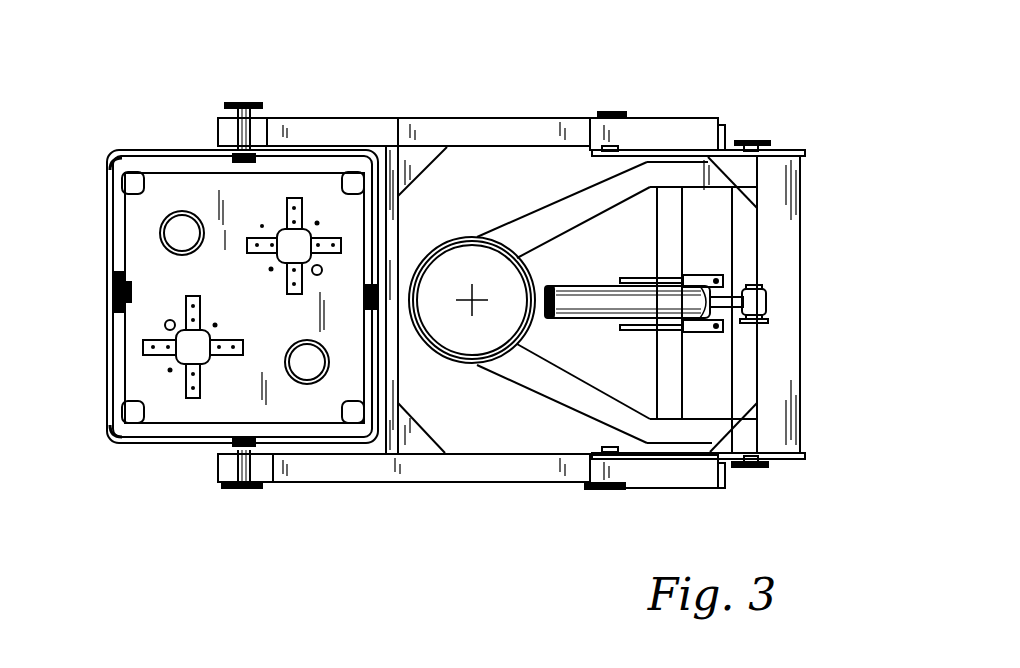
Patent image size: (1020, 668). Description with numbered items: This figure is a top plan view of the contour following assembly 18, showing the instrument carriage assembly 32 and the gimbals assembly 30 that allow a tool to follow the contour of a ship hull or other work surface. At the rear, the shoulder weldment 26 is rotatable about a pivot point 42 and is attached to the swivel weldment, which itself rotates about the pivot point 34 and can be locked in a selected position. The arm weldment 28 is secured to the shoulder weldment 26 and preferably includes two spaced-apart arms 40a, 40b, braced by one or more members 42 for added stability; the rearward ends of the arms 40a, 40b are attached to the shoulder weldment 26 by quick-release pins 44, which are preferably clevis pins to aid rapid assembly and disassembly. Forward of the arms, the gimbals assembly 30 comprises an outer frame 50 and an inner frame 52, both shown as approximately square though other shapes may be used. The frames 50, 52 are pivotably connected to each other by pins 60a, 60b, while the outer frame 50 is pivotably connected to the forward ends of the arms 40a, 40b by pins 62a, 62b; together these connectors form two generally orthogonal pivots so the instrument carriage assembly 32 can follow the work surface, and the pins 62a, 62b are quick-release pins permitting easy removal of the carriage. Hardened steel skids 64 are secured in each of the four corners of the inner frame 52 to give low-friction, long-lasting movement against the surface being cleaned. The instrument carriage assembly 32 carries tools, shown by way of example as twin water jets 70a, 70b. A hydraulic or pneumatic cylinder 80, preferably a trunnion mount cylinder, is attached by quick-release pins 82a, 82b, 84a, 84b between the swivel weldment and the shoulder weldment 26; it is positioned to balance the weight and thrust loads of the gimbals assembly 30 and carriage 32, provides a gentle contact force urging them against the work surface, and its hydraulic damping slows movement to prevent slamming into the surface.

The contour following assembly 18 is at (470, 88).
The shoulder weldment 26 is at (696, 118).
The arm weldment 28 is at (527, 118).
The gimbals assembly 30 is at (182, 148).
The instrument carriage assembly 32 is at (271, 297).
The pivot point 34 is at (476, 296).
The arm 40a is at (393, 118).
The arm 40b is at (477, 482).
The bracing member 42 is at (577, 300).
The quick-release pin 44 is at (610, 112).
The outer frame 50 is at (125, 150).
The inner frame 52 is at (122, 236).
The pin 60a is at (116, 300).
The pin 60b is at (413, 252).
The pin 62a is at (244, 103).
The pin 62b is at (244, 490).
The skid 64 is at (107, 166).
The water jet 70a is at (288, 198).
The water jet 70b is at (192, 398).
The hydraulic or pneumatic cylinder 80 is at (582, 285).
The quick-release pin 82a is at (752, 289).
The quick-release pin 82b is at (752, 320).
The quick-release pin 84a is at (720, 276).
The quick-release pin 84b is at (720, 334).